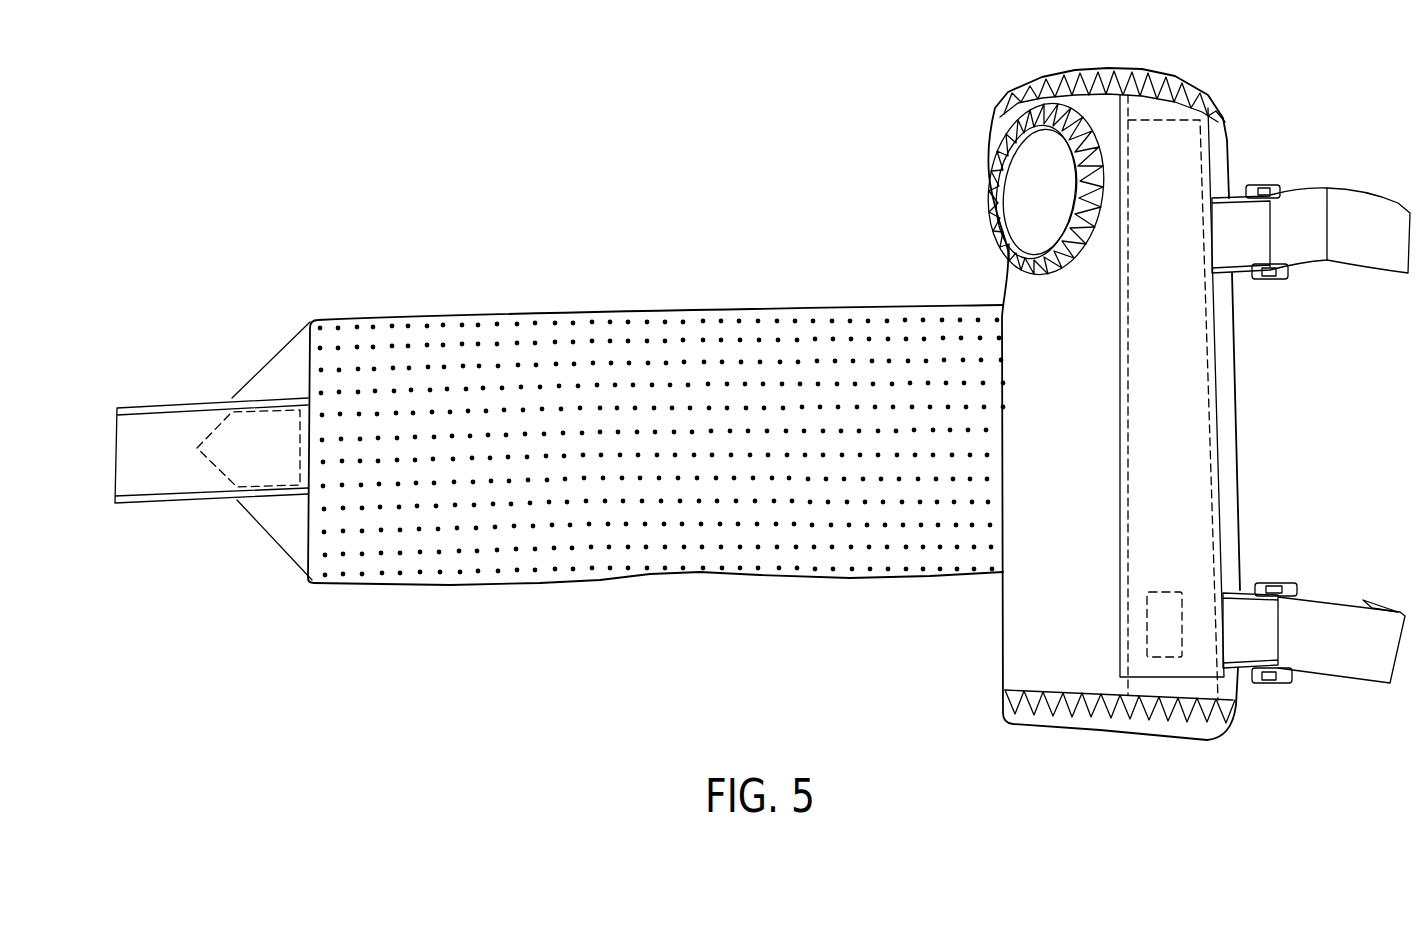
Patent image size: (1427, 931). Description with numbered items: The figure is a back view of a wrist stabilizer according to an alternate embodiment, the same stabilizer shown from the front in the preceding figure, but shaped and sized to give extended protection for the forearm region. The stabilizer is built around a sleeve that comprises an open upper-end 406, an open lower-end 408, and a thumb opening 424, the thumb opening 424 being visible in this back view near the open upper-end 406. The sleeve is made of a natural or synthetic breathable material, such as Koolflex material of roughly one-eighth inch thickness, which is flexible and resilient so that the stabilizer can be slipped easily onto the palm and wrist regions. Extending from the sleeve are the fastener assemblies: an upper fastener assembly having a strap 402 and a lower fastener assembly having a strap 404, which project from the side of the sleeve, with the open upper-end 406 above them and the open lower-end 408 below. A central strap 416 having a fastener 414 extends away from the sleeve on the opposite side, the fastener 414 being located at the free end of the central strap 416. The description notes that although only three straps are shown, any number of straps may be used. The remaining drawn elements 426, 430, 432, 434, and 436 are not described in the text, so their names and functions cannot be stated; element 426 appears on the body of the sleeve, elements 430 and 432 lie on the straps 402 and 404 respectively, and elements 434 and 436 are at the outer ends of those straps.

The strap 402 is at (1312, 192).
The strap 404 is at (1323, 680).
The open upper-end 406 is at (1105, 67).
The open lower-end 408 is at (1103, 737).
The fastener 414 is at (150, 407).
The central strap 416 is at (422, 317).
The thumb opening 424 is at (990, 185).
The flap 426 is at (1198, 442).
The upper buckle 430 is at (1262, 182).
The lower buckle 432 is at (1285, 583).
The upper strap end 434 is at (1390, 208).
The lower strap end tab 436 is at (1398, 610).